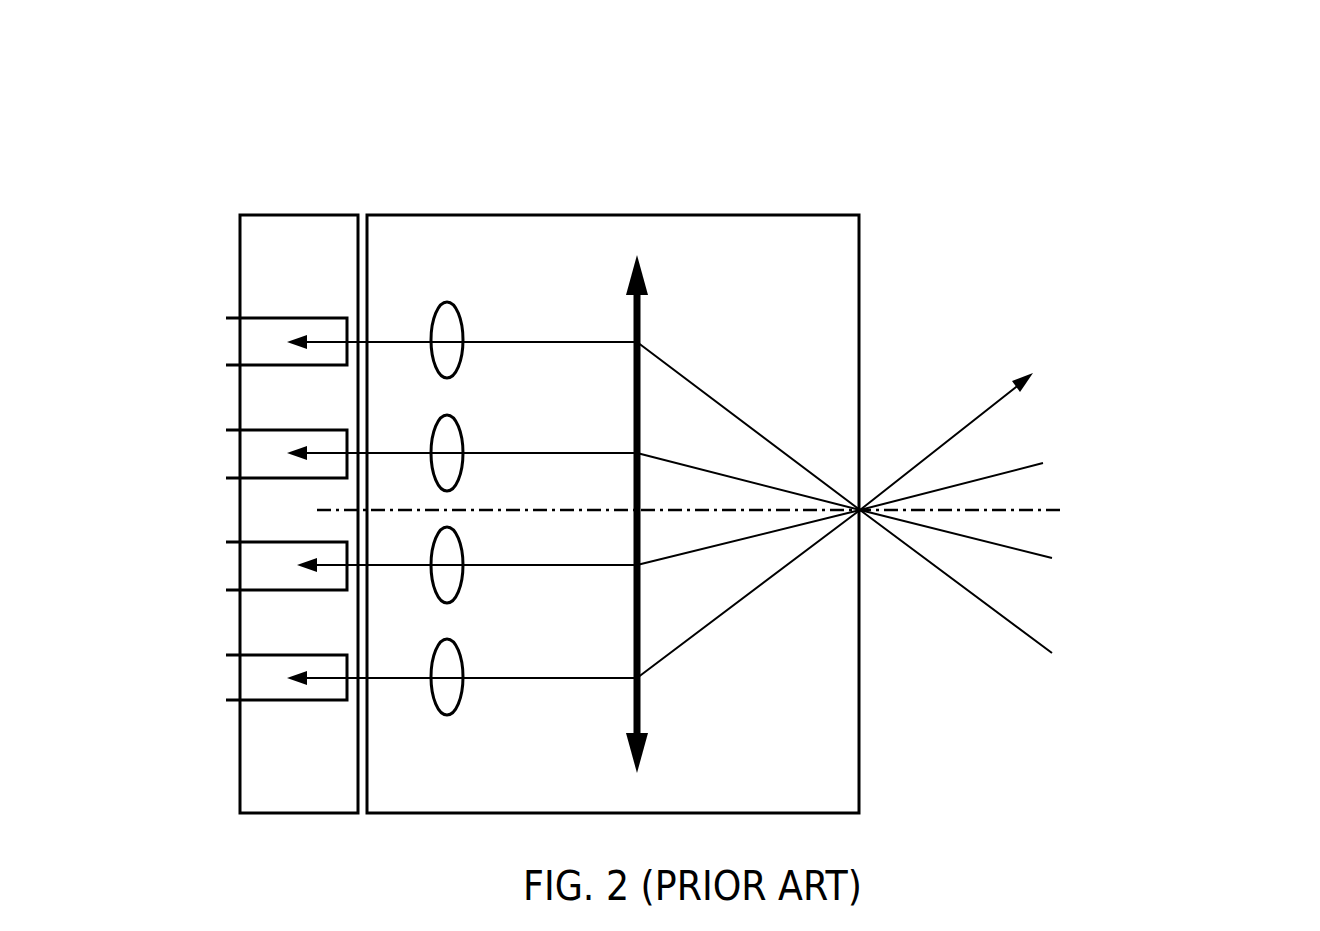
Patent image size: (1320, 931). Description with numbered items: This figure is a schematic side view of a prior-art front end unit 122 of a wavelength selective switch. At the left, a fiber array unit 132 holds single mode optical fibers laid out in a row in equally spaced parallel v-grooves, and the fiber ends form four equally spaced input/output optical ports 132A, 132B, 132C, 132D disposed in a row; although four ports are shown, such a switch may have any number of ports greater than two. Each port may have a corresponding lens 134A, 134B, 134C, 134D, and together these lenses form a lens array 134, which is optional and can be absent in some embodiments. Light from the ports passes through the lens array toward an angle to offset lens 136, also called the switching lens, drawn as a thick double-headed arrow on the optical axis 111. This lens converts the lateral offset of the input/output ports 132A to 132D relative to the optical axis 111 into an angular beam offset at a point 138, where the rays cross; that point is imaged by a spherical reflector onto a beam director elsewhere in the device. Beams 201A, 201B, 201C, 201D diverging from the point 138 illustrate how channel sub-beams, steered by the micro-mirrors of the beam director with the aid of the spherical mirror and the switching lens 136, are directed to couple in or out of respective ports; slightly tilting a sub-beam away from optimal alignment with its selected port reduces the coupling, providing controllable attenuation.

The front end unit 122 is at (975, 152).
The fiber array unit 132 is at (266, 143).
The input/output optical port 132A is at (238, 318).
The input/output optical port 132B is at (238, 430).
The input/output optical port 132C is at (238, 592).
The input/output optical port 132D is at (238, 703).
The lens array 134 is at (593, 143).
The lens 134A is at (460, 310).
The lens 134B is at (460, 423).
The lens 134C is at (455, 597).
The lens 134D is at (460, 708).
The angle to offset lens 136 is at (648, 288).
The point 138 is at (858, 513).
The optical axis 111 is at (1037, 507).
The beam 201A is at (965, 588).
The beam 201B is at (1018, 553).
The beam 201C is at (925, 447).
The beam 201D is at (1038, 462).